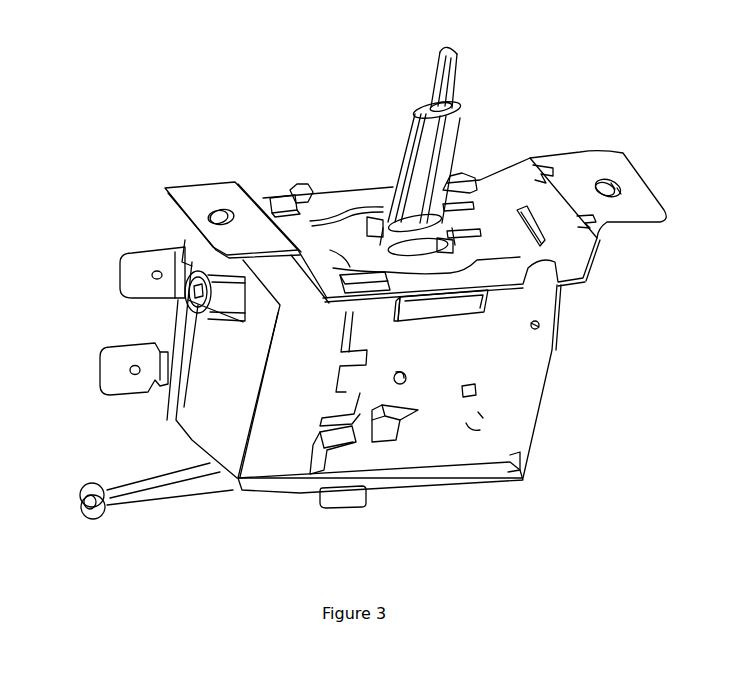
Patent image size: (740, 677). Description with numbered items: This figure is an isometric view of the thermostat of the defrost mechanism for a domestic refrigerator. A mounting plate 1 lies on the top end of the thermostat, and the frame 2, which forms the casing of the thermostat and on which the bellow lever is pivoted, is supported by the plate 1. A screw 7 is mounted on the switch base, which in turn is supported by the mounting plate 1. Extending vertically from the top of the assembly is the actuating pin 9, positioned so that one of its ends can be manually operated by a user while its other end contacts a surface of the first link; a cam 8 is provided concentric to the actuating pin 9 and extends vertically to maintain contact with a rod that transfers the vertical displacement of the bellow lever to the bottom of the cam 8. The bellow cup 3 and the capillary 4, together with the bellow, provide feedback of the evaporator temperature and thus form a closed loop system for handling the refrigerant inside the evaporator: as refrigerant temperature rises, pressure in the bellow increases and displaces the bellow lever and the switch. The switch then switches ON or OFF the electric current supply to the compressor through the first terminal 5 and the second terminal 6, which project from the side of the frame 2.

The mounting plate 1 is at (586, 159).
The frame 2 is at (535, 385).
The bellow cup 3 is at (439, 482).
The capillary 4 is at (157, 497).
The first terminal 5 is at (119, 377).
The second terminal 6 is at (127, 280).
The screw 7 is at (195, 280).
The cam 8 is at (404, 160).
The actuating pin 9 is at (463, 66).